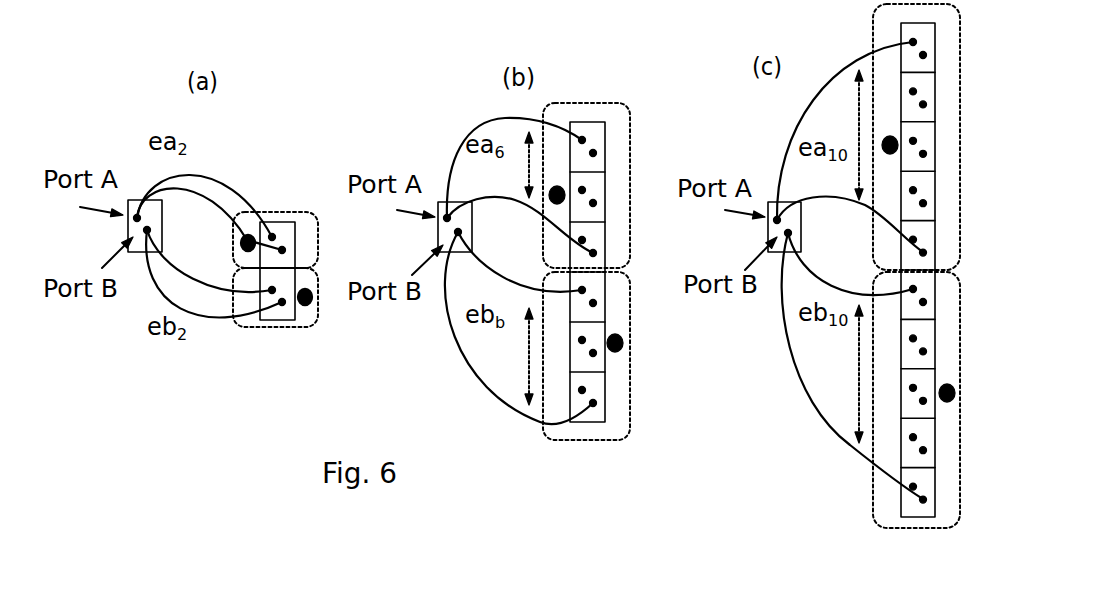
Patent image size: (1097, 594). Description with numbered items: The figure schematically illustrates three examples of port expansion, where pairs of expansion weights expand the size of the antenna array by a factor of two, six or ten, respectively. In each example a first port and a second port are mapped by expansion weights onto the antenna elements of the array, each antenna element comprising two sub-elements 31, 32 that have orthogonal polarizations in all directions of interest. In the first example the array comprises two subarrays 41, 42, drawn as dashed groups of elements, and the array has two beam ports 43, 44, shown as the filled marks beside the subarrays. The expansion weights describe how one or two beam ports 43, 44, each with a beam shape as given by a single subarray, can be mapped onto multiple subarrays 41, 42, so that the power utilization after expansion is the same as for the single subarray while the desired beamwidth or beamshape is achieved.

The sub-element 31 is at (301, 221).
The sub-element 32 is at (286, 222).
The subarray 41 is at (277, 211).
The subarray 42 is at (247, 328).
The beam port 43 is at (250, 236).
The beam port 44 is at (305, 306).